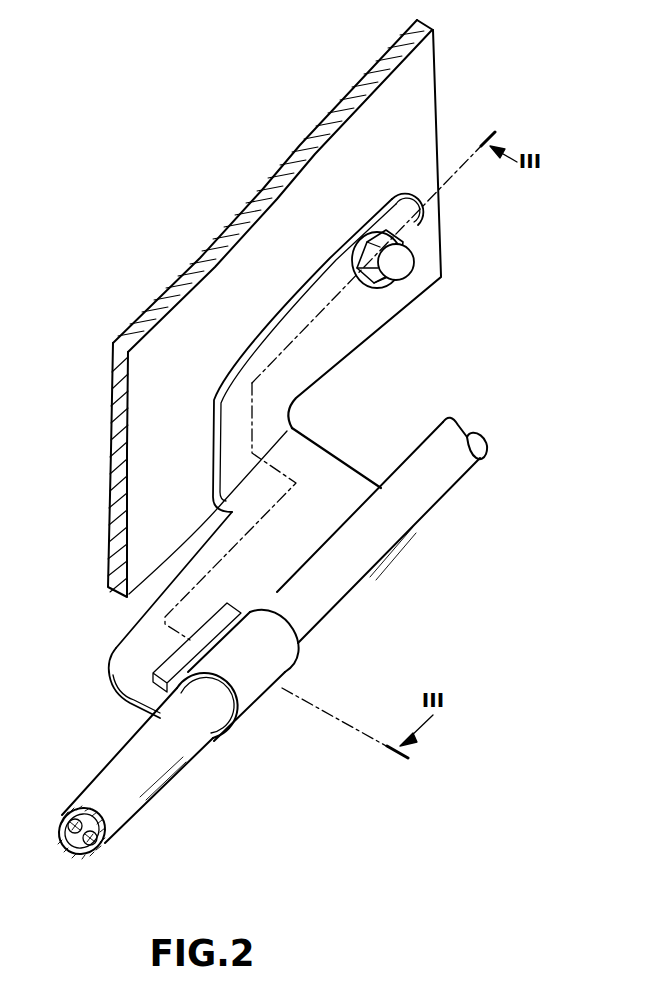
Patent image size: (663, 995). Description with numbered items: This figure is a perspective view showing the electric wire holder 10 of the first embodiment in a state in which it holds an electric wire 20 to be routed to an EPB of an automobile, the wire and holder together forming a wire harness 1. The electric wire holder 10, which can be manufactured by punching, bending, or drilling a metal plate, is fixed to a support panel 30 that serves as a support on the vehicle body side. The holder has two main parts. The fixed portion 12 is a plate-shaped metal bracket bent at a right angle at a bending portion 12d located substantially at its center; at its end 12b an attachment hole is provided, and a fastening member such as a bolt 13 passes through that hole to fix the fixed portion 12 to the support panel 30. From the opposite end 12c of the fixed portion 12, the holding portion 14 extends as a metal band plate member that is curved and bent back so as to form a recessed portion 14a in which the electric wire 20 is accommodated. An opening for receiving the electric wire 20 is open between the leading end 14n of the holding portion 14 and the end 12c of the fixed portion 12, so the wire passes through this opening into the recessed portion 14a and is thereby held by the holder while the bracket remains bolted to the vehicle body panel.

The wire harness 1 is at (412, 604).
The electric wire holder 10 is at (108, 614).
The fixed portion 12 is at (324, 338).
The end of the fixed portion 12b is at (415, 227).
The one end of the fixed portion 12c is at (160, 702).
The bending portion 12d is at (287, 445).
The bolt 13 is at (398, 272).
The holding portion 14 is at (285, 662).
The recessed portion 14a is at (247, 713).
The leading end of the holding portion 14n is at (193, 652).
The electric wire 20 is at (132, 808).
The support panel 30 is at (233, 220).